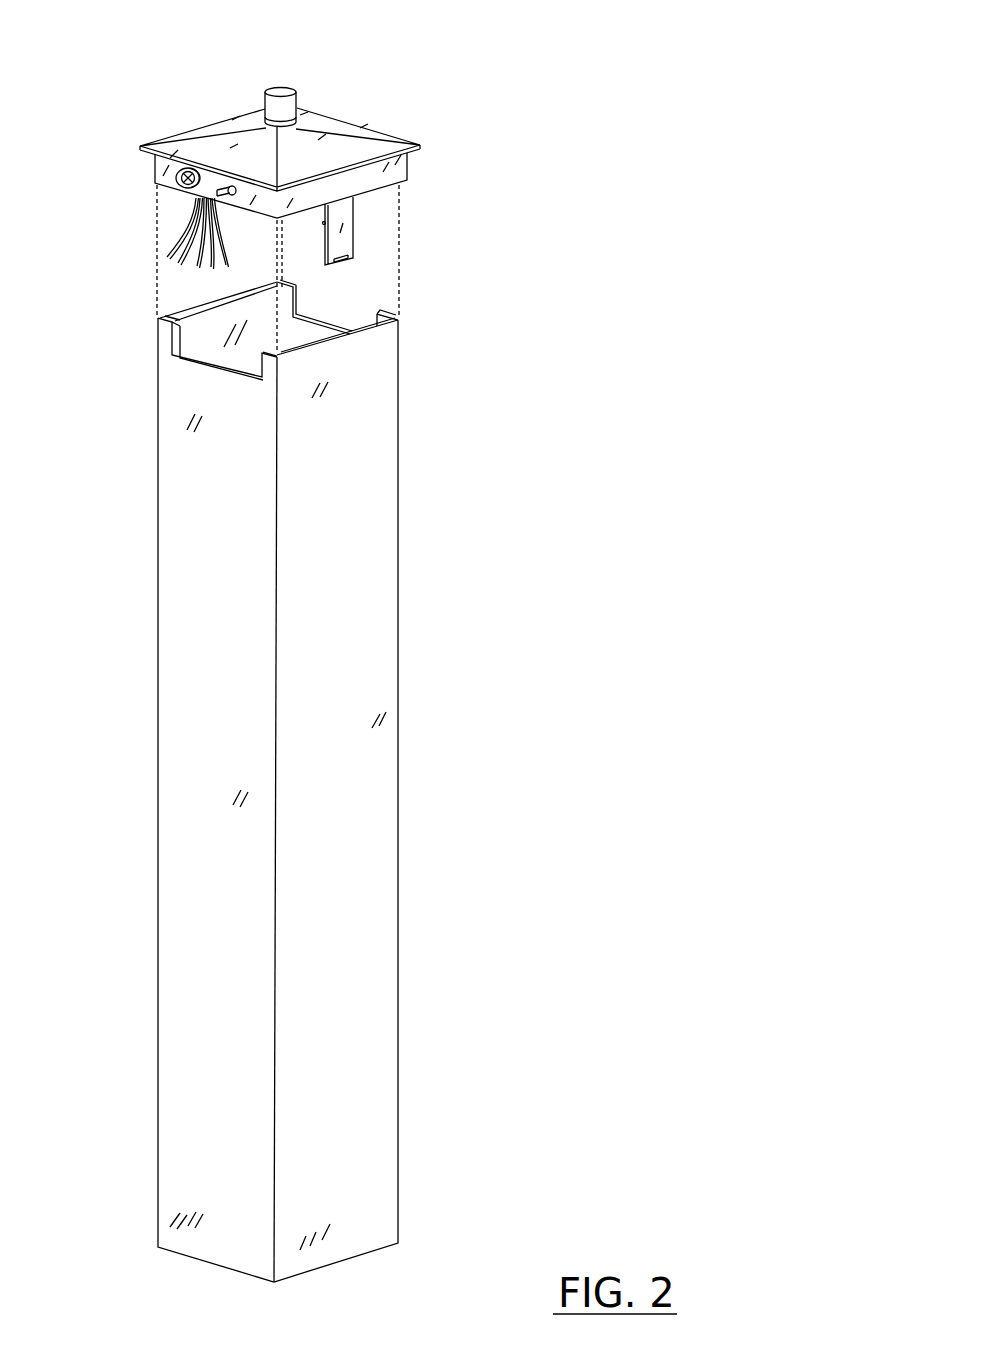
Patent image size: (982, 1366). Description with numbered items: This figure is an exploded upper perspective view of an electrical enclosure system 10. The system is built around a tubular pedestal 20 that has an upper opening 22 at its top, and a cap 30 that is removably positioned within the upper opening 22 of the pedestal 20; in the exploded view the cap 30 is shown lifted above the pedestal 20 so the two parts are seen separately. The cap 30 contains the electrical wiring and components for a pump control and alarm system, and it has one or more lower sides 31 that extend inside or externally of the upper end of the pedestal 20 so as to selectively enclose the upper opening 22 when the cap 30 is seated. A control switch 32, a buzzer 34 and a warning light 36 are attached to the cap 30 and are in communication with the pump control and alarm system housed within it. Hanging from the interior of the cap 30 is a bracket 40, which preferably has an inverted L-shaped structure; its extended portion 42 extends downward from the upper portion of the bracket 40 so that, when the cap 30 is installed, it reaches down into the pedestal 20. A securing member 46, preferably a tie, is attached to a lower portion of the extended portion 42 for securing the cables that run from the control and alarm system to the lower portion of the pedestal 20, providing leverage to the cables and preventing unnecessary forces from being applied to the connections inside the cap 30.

The electrical enclosure system 10 is at (649, 91).
The tubular pedestal 20 is at (408, 778).
The upper opening 22 is at (180, 357).
The cap 30 is at (406, 122).
The lower sides 31 is at (404, 175).
The control switch 32 is at (227, 188).
The buzzer 34 is at (176, 178).
The warning light 36 is at (263, 99).
The bracket 40 is at (369, 246).
The extended portion 42 is at (348, 212).
The securing member 46 is at (283, 248).